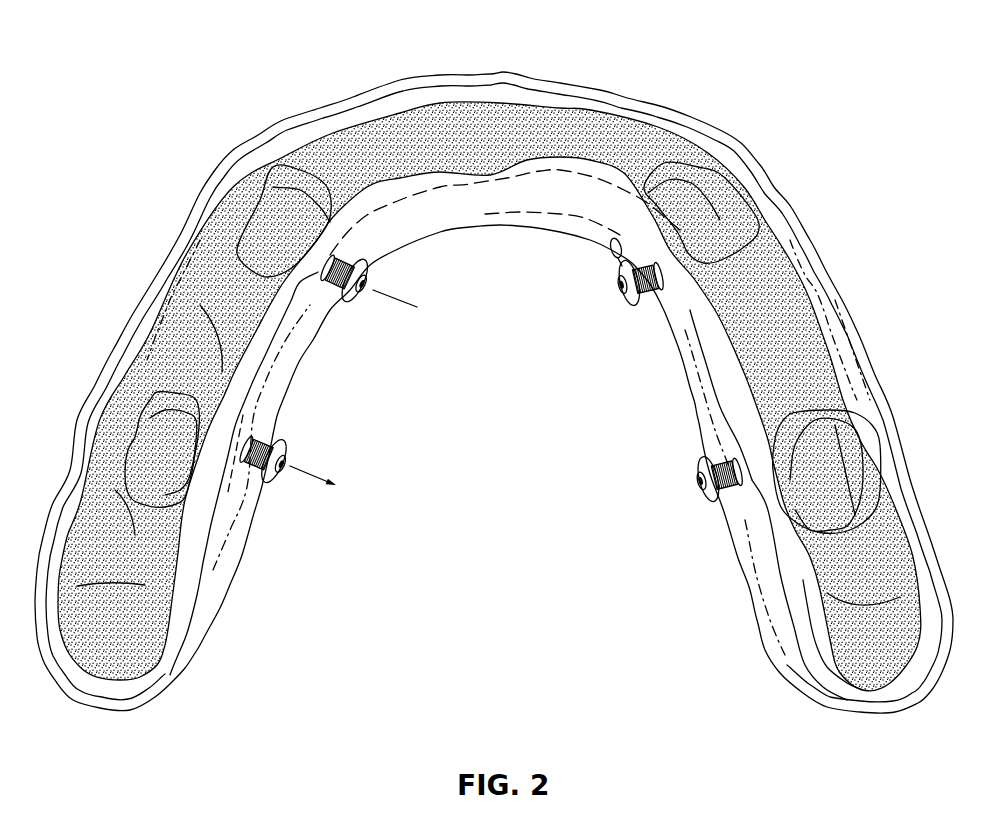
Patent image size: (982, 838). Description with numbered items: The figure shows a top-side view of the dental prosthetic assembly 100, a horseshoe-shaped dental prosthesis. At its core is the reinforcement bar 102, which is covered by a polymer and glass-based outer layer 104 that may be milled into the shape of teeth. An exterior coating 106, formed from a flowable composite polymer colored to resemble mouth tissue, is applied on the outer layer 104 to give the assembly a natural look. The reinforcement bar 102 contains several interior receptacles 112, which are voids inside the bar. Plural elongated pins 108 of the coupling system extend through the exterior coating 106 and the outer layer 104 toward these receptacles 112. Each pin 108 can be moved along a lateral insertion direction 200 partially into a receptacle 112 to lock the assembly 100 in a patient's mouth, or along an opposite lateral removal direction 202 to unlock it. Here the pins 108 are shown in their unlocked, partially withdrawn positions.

The dental prosthetic assembly 100 is at (328, 40).
The reinforcement bar 102 is at (581, 130).
The outer layer 104 is at (293, 140).
The exterior coating 106 is at (133, 310).
The elongated pins 108 is at (691, 486).
The interior receptacles 112 is at (156, 482).
The lateral insertion directions 200 is at (387, 293).
The lateral removal directions 202 is at (317, 486).